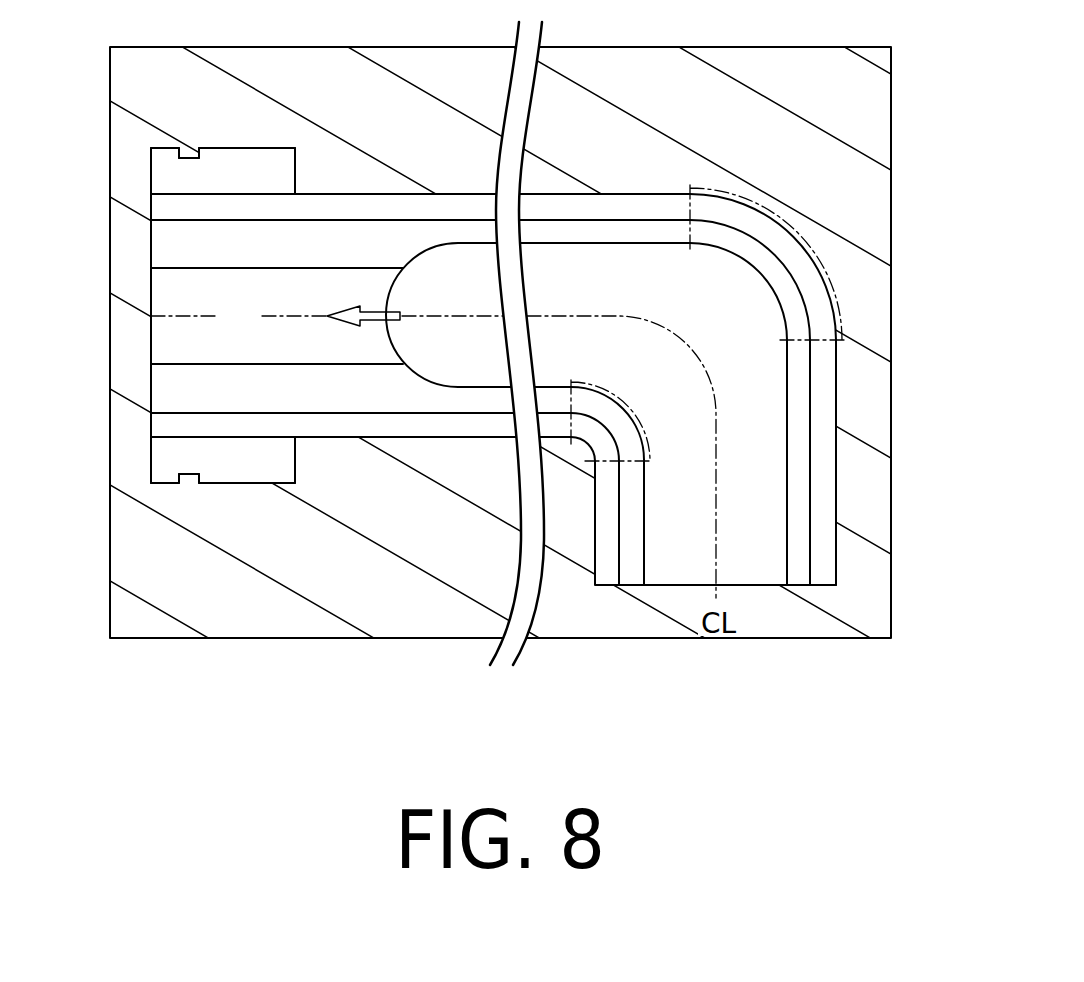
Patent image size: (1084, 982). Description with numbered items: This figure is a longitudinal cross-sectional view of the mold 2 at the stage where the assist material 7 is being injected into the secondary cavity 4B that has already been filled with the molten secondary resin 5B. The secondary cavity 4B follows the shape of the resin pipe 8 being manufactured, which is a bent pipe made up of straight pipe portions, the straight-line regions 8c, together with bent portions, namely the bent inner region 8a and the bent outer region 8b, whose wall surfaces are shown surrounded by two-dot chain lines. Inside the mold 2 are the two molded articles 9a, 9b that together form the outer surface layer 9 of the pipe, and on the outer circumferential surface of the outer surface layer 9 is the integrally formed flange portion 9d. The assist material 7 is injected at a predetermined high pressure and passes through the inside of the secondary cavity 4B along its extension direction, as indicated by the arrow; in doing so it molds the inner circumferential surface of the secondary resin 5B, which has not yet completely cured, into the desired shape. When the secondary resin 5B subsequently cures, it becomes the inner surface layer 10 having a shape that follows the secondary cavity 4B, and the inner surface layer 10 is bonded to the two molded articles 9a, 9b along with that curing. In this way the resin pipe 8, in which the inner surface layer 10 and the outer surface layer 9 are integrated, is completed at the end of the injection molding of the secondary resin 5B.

The mold 2 is at (400, 622).
The secondary cavity 4B is at (160, 327).
The secondary resin 5B is at (433, 451).
The assist material 7 is at (400, 338).
The resin pipe 8 is at (597, 165).
The bent inner region 8a is at (588, 443).
The bent outer region 8b is at (788, 213).
The straight-line region 8c is at (828, 417).
The outer surface layer 9 is at (381, 203).
The molded article 9a is at (420, 207).
The molded article 9b is at (361, 425).
The flange portion 9d is at (233, 157).
The inner surface layer 10 is at (637, 530).